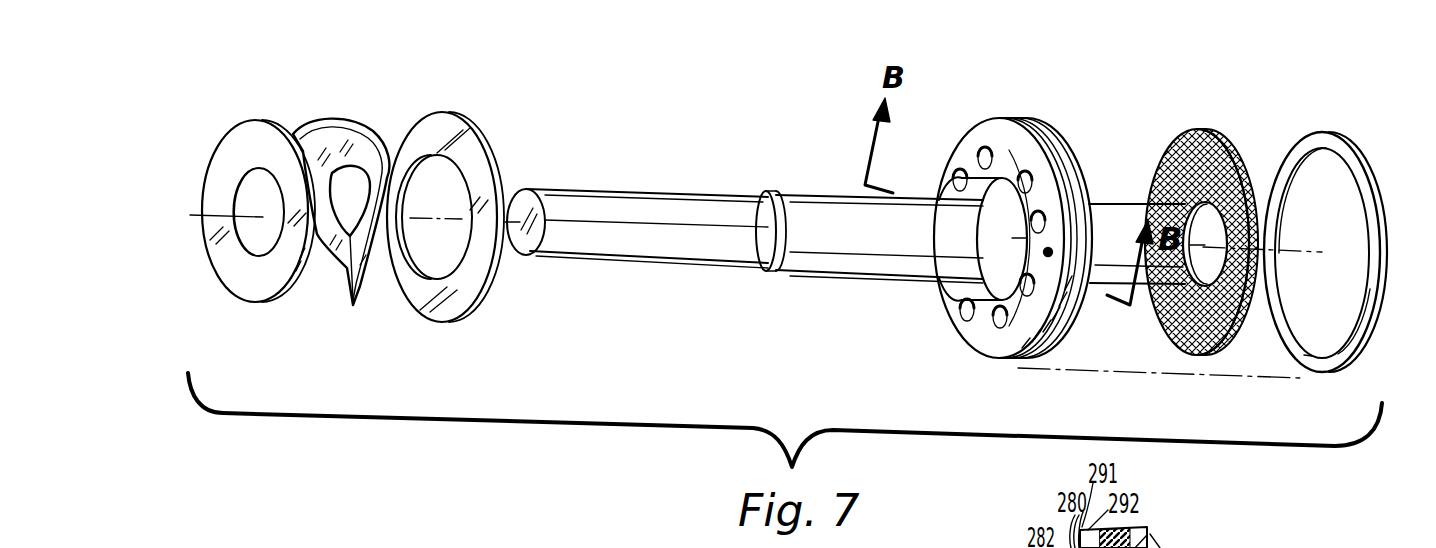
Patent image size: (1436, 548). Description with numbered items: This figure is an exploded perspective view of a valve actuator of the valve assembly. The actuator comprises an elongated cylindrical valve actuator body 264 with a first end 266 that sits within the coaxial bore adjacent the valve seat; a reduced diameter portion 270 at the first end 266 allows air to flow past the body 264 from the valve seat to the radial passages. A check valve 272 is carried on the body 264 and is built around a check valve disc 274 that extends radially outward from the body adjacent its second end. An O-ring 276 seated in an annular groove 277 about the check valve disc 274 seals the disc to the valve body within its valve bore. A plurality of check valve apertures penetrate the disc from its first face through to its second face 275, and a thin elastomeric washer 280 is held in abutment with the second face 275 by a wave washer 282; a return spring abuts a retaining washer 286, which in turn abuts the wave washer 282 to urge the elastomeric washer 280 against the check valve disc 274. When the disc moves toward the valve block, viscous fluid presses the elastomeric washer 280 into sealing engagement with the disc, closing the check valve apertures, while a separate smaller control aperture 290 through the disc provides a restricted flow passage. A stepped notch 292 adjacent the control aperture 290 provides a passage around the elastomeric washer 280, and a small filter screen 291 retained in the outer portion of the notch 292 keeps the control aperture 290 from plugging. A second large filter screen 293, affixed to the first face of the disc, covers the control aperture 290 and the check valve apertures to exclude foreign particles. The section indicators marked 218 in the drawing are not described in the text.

The holes 218 is at (985, 150).
The valve actuator body 264 is at (825, 260).
The first end 266 is at (522, 189).
The reduced diameter portion 270 is at (668, 247).
The check valve 272 is at (1037, 501).
The check valve disc 274 is at (1022, 239).
The second face 275 is at (957, 333).
The O-ring 276 is at (1357, 352).
The annular groove 277 is at (1053, 137).
The elastomeric washer 280 is at (445, 127).
The wave washer 282 is at (362, 150).
The retaining washer 286 is at (263, 138).
The control aperture 290 is at (1160, 547).
The small filter screen 291 is at (1053, 288).
The stepped notch 292 is at (1050, 250).
The large filter screen 293 is at (1237, 143).